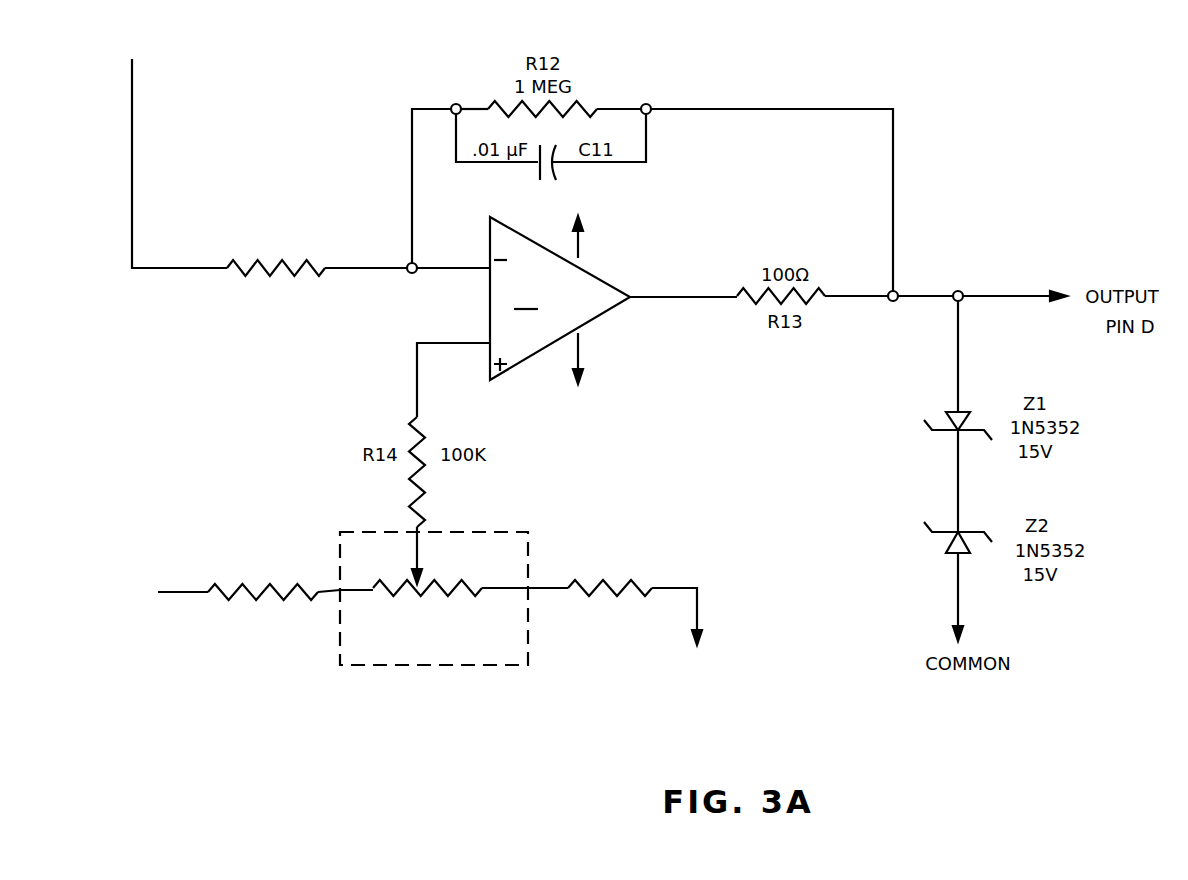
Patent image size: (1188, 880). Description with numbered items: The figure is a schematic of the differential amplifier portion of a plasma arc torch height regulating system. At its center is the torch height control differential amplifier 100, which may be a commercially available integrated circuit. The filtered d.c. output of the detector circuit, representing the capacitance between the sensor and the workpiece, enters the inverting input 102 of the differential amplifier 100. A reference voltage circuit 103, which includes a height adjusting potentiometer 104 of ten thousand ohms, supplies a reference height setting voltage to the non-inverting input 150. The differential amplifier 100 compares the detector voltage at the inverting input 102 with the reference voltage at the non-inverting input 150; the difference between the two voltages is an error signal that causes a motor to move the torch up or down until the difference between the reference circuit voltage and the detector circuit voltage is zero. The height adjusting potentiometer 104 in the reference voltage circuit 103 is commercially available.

The torch height control differential amplifier 100 is at (452, 311).
The inverting input 102 is at (488, 268).
The non-inverting input 150 is at (490, 348).
The height adjusting potentiometer 104 is at (413, 588).
The reference voltage circuit 103 is at (425, 577).